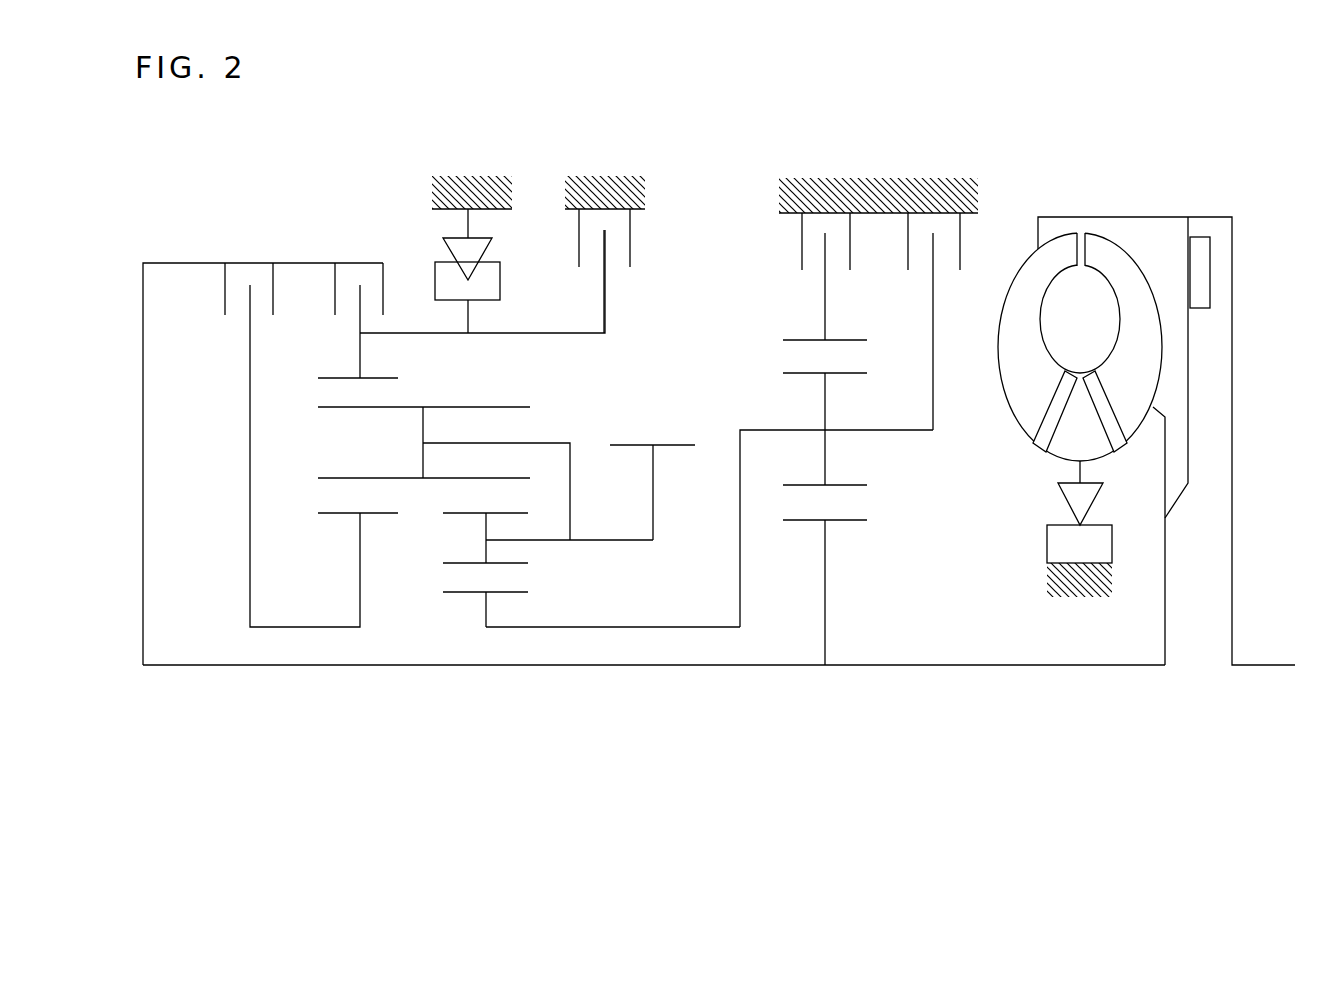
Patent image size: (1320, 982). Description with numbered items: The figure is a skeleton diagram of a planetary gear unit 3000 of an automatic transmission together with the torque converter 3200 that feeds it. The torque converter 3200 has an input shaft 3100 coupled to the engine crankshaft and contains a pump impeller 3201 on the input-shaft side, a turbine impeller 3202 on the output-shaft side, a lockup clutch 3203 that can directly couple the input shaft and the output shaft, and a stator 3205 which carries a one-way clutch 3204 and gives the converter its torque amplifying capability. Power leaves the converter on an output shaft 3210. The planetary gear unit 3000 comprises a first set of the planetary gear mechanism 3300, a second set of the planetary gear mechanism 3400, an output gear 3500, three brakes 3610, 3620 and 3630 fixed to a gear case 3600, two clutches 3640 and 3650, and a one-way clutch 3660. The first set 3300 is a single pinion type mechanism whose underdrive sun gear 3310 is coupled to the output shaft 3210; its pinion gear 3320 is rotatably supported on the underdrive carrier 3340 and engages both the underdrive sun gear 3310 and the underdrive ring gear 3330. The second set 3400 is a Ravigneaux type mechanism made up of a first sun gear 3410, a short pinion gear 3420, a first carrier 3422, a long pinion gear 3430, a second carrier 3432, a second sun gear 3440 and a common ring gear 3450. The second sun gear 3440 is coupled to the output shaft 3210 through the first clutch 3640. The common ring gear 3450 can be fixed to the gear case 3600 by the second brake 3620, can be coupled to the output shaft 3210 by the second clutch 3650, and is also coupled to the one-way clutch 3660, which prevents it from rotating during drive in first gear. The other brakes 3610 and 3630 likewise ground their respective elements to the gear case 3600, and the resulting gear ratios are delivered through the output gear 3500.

The planetary gear unit 3000 is at (729, 88).
The input shaft 3100 is at (1262, 668).
The torque converter 3200 is at (1108, 190).
The pump impeller 3201 is at (1032, 258).
The turbine impeller 3202 is at (1163, 262).
The lockup clutch 3203 is at (1212, 269).
The one-way clutch 3204 is at (1103, 485).
The stator 3205 is at (1052, 450).
The output shaft 3210 is at (955, 665).
The first set of the planetary gear mechanism 3300 is at (825, 692).
The sun gear S (UD) 3310 is at (840, 564).
The pinion gear 3320 is at (853, 476).
The ring gear R (UD) 3330 is at (836, 332).
The carrier C (UD) 3340 is at (933, 397).
The second set of the planetary gear mechanism 3400 is at (487, 692).
The sun gear S (D) 3410 is at (540, 592).
The short pinion gear 3420 is at (442, 528).
The carrier C (1) 3422 is at (552, 542).
The long pinion gear 3430 is at (528, 400).
The carrier C (2) 3432 is at (508, 443).
The sun gear S (S) 3440 is at (340, 522).
The ring gear R (1) (R (2)) 3450 is at (387, 356).
The output gear 3500 is at (679, 438).
The gear case 3600 is at (478, 172).
The B1 brake 3610 is at (950, 275).
The B2 brake 3620 is at (623, 273).
The B3 brake 3630 is at (796, 274).
The C1 clutch 3640 is at (217, 301).
The C2 clutch 3650 is at (327, 303).
The one-way clutch F 3660 is at (432, 245).